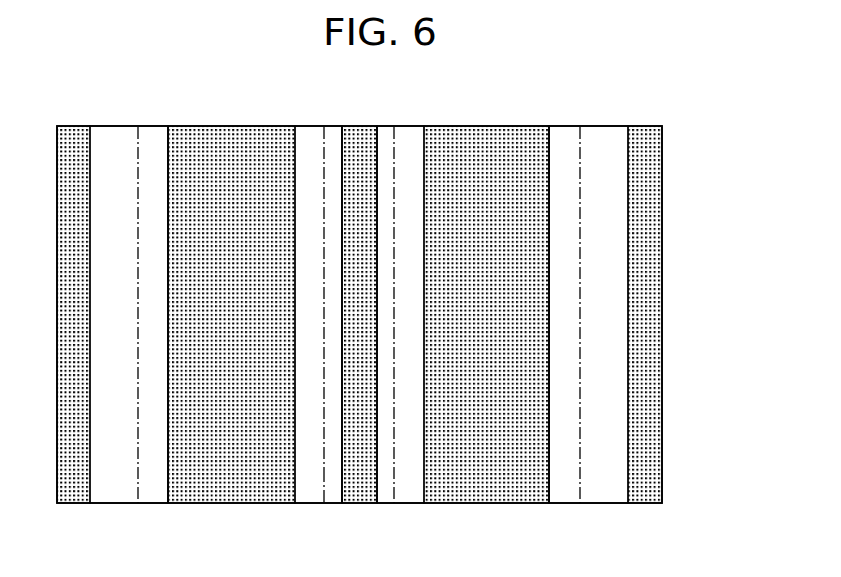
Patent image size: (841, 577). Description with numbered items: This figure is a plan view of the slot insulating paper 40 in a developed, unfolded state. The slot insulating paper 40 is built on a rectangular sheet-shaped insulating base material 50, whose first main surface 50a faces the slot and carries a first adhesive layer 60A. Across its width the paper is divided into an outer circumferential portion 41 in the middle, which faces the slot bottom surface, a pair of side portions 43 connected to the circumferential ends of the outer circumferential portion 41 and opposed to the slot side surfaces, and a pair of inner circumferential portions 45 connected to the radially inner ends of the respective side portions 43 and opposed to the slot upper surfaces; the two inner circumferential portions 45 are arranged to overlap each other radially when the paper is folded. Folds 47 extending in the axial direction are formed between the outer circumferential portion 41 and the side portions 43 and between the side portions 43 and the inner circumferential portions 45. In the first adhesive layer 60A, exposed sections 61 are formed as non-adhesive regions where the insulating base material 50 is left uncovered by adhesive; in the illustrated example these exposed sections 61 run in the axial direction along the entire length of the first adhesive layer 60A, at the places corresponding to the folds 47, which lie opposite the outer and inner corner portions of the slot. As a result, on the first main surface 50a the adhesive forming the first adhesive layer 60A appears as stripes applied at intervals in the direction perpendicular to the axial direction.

The slot insulating paper 40 is at (610, 117).
The outer circumferential portion 41 is at (385, 503).
The side portions 43 is at (237, 503).
The inner circumferential portions 45 is at (110, 503).
The folds 47 is at (323, 475).
The insulating base material 50 is at (407, 141).
The first main surface 50a is at (316, 160).
The first adhesive layer 60A is at (210, 142).
The exposed sections 61 is at (168, 158).